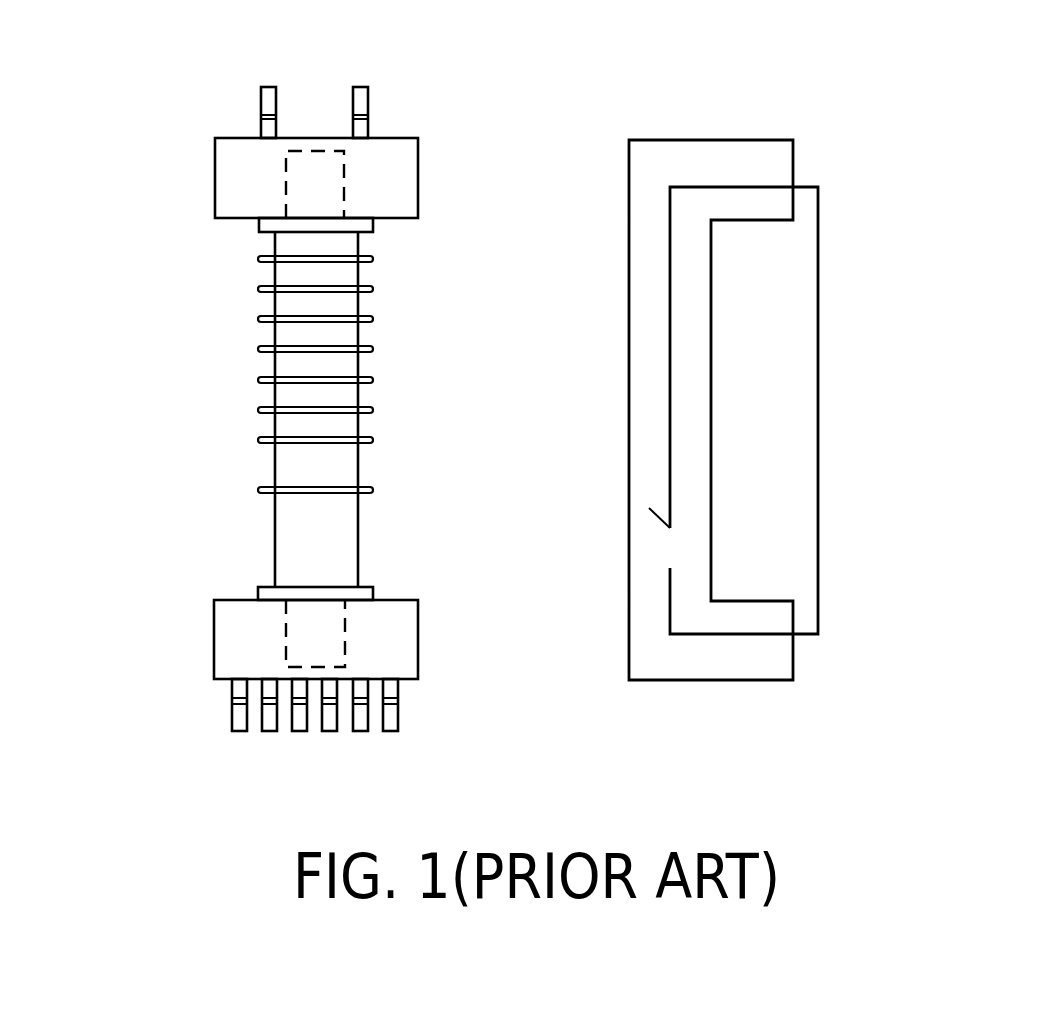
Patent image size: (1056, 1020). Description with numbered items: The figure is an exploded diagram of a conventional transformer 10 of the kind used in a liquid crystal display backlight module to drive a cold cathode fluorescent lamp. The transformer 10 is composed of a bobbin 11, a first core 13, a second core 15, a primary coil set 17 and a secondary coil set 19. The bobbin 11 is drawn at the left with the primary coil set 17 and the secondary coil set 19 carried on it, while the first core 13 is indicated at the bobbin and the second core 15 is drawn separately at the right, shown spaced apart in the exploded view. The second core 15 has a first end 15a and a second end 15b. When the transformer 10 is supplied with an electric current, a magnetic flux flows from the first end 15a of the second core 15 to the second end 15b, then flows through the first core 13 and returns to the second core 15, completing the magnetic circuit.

The transformer 10 is at (1046, 62).
The bobbin 11 is at (408, 541).
The first core 13 is at (285, 185).
The second core 15 is at (708, 140).
The first end 15a is at (753, 140).
The second end 15b is at (810, 660).
The primary coil set 17 is at (250, 495).
The secondary coil set 19 is at (250, 237).